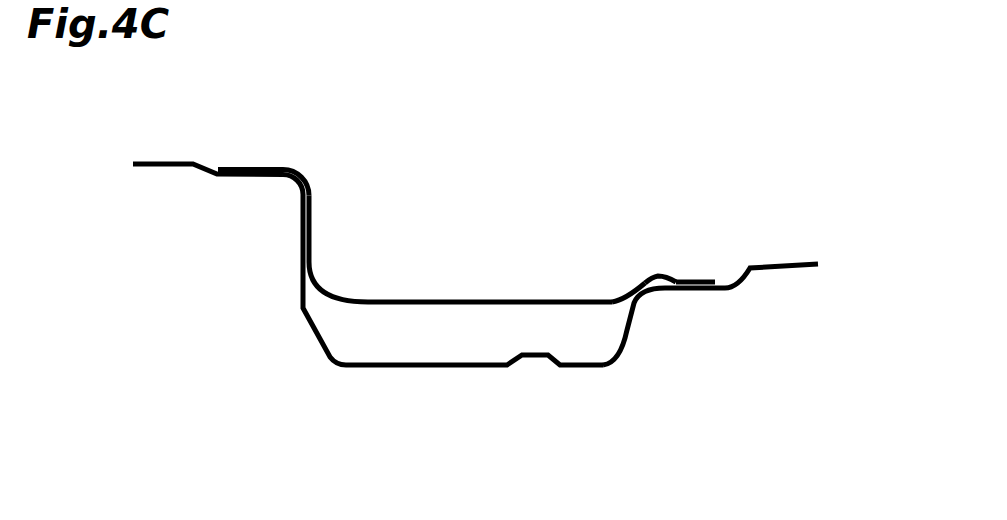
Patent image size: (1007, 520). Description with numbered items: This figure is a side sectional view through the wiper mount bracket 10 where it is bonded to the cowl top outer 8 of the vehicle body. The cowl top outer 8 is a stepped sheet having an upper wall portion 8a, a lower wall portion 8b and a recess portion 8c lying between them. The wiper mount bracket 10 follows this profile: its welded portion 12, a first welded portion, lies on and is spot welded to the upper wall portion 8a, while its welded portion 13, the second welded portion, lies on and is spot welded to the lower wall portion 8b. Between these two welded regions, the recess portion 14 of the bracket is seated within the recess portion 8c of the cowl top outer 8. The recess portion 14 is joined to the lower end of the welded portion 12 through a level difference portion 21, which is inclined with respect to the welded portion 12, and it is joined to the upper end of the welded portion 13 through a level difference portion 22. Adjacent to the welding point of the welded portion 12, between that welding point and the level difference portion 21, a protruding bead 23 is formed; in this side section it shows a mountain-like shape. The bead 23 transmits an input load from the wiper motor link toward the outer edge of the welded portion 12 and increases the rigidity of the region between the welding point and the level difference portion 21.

The cowl top outer 8 is at (475, 306).
The upper wall portion 8a is at (712, 292).
The lower wall portion 8b is at (265, 178).
The recess portion 8c is at (414, 364).
The wiper mount bracket 10 is at (474, 196).
The welded portion 12 is at (685, 278).
The welded portion 13 is at (273, 167).
The recess portion 14 is at (460, 300).
The level difference portion 21 is at (613, 297).
The level difference portion 22 is at (314, 230).
The bead 23 is at (652, 274).